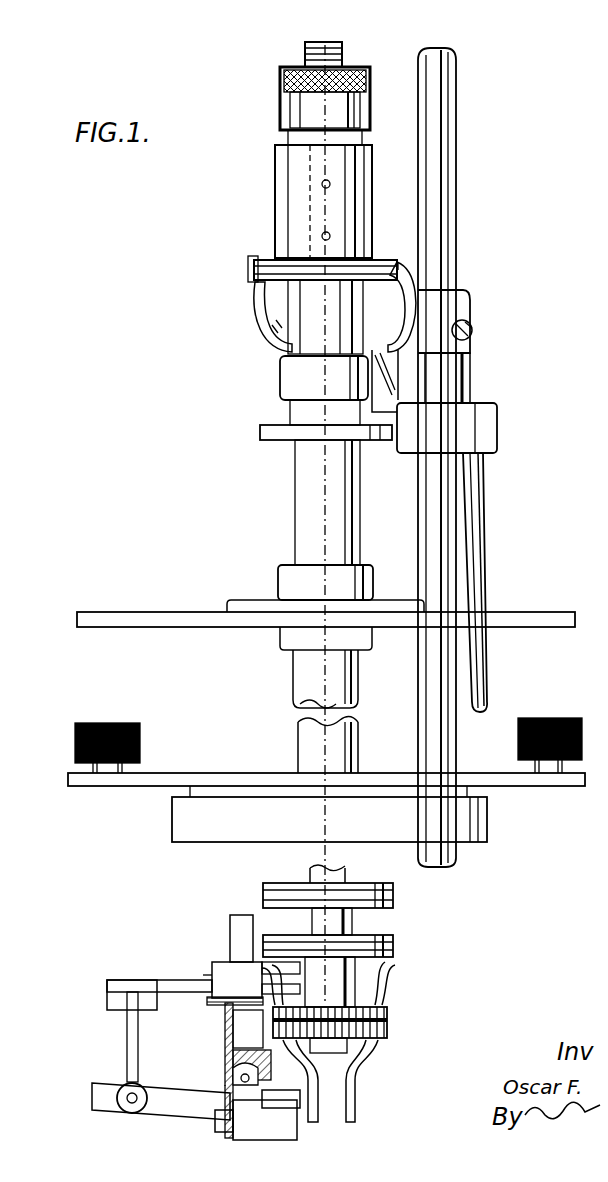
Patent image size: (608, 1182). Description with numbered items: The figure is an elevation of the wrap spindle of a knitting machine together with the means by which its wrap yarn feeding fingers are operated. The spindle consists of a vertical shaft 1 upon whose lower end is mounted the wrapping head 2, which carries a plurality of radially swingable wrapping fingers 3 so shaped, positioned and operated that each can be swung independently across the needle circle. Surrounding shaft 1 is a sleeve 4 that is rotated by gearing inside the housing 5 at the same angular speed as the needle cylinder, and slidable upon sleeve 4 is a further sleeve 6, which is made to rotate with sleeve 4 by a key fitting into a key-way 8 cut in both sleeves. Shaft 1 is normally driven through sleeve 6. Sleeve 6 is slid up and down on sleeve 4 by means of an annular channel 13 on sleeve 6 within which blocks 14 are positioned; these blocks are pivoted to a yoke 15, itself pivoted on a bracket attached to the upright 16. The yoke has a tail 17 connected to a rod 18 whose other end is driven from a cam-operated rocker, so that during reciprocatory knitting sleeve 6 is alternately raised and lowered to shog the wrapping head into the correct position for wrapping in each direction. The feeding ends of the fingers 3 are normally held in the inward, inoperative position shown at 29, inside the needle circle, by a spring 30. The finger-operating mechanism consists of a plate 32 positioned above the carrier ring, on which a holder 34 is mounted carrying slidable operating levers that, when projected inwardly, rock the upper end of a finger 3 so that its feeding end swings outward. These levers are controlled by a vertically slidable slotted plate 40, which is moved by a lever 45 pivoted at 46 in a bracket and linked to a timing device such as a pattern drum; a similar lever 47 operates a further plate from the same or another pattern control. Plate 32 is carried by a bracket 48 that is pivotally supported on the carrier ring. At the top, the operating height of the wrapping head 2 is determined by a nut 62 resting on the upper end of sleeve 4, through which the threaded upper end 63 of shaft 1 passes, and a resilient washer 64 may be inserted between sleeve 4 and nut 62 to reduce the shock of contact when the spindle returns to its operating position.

The shaft 1 is at (306, 874).
The wrapping head 2 is at (392, 1004).
The wrapping fingers 3 is at (240, 960).
The sleeve 4 is at (298, 488).
The housing 5 is at (173, 826).
The sleeve 6 is at (276, 197).
The key-way 8 is at (335, 328).
The annular channel 13 is at (370, 266).
The blocks 14 is at (400, 268).
The yoke 15 is at (268, 315).
The upright 16 is at (445, 220).
The tail 17 is at (458, 320).
The rod 18 is at (480, 488).
The inward position of finger feeding ends 29 is at (358, 1122).
The spring 30 is at (387, 1030).
The plate 32 is at (210, 1004).
The holder 34 is at (212, 966).
The vertically slidable plate 40 is at (240, 915).
The lever 45 is at (200, 1098).
The pivot 46 is at (122, 1088).
The lever 47 is at (175, 1082).
The bracket 48 is at (226, 1085).
The nut 62 is at (298, 67).
The upper end of shaft 63 is at (338, 44).
The washer 64 is at (300, 122).